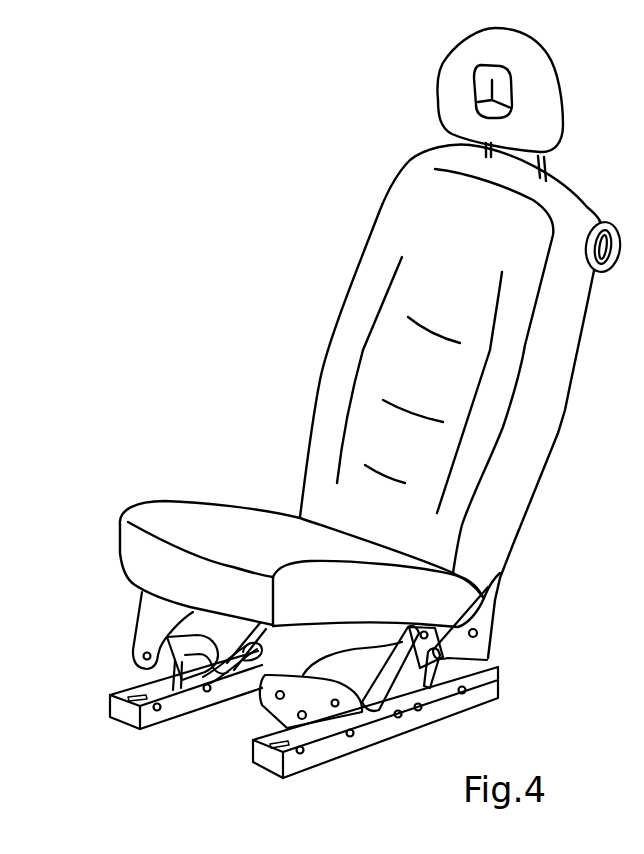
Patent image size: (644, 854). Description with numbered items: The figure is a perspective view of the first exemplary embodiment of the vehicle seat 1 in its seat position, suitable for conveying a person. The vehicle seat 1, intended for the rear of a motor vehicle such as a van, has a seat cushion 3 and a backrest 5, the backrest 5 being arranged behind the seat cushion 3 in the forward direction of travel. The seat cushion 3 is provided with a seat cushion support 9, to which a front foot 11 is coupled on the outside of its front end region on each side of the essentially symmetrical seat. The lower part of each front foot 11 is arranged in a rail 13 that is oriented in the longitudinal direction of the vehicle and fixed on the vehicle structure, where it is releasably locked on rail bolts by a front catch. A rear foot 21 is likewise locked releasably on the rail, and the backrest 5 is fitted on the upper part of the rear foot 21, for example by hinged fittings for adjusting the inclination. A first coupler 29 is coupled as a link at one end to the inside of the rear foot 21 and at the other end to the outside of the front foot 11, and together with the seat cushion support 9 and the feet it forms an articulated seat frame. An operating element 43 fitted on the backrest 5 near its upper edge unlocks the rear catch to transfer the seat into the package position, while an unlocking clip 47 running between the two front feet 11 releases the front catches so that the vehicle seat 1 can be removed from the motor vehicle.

The vehicle seat 1 is at (244, 266).
The seat cushion 3 is at (247, 528).
The backrest 5 is at (425, 229).
The seat cushion support 9 is at (153, 611).
The front foot 11 is at (165, 668).
The rail 13 is at (122, 703).
The rear foot 21 is at (468, 645).
The first coupler 29 is at (390, 680).
The operating element 43 is at (612, 268).
The unlocking clip 47 is at (206, 690).